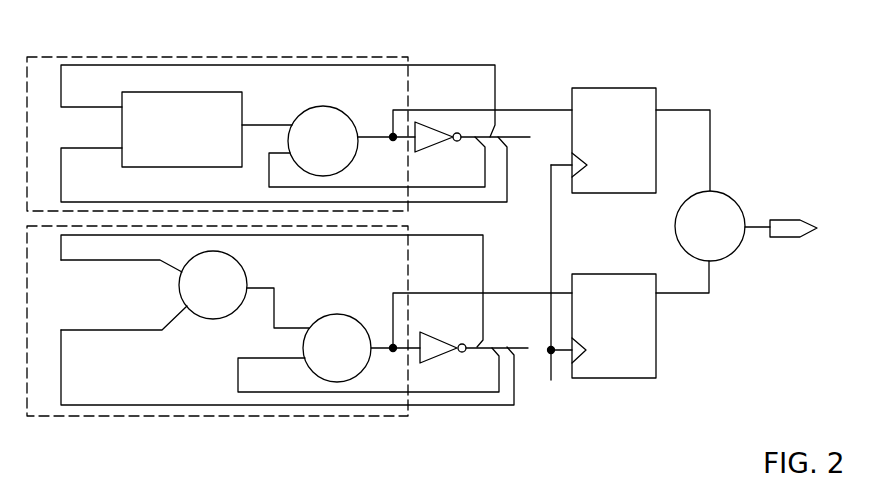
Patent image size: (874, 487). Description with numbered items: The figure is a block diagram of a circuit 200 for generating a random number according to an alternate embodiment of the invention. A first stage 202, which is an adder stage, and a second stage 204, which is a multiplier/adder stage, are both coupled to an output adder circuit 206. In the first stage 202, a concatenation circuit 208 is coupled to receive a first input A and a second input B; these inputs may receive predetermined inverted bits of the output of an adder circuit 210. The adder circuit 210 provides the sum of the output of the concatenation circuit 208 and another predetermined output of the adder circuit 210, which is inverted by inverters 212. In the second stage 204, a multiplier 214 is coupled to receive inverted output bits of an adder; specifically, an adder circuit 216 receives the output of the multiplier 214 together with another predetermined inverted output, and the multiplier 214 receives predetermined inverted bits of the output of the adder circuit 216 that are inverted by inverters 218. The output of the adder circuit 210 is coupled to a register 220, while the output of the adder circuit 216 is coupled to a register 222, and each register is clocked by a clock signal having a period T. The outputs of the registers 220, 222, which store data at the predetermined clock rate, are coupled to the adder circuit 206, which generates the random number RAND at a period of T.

The random number generator system 200 is at (715, 417).
The first stage 202 is at (77, 56).
The second stage 204 is at (407, 282).
The adder circuit 206 is at (733, 200).
The concatenation circuit 208 is at (243, 107).
The adder circuit 210 is at (350, 115).
The inverters 212 is at (420, 122).
The multiplier 214 is at (247, 272).
The adder circuit 216 is at (340, 315).
The inverters 218 is at (438, 355).
The register 220 is at (595, 88).
The register 222 is at (587, 273).